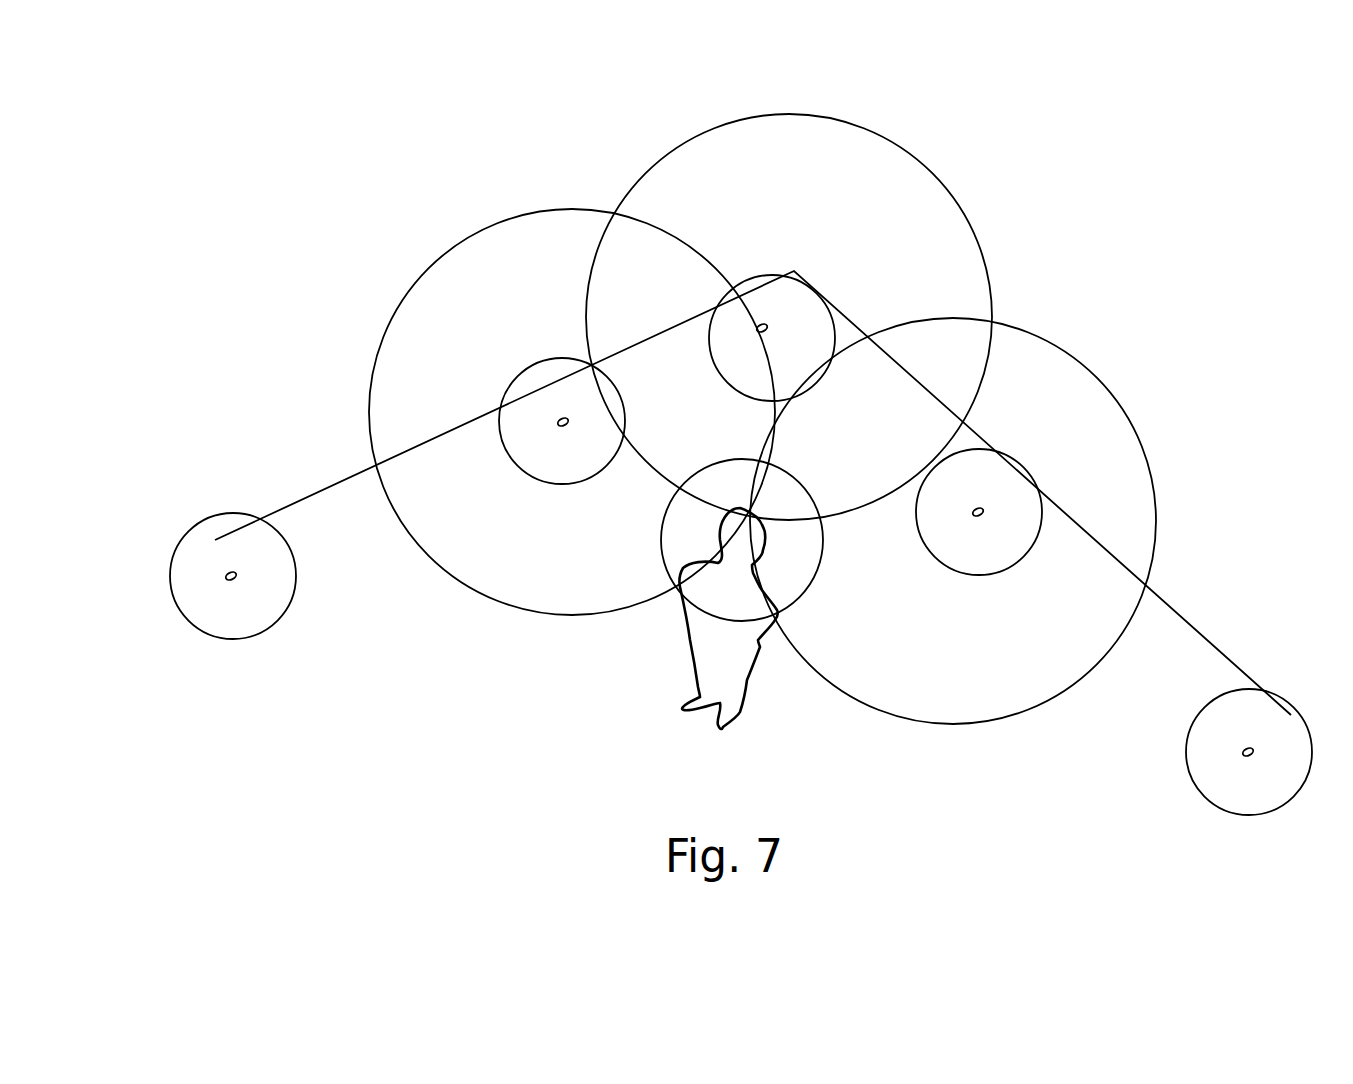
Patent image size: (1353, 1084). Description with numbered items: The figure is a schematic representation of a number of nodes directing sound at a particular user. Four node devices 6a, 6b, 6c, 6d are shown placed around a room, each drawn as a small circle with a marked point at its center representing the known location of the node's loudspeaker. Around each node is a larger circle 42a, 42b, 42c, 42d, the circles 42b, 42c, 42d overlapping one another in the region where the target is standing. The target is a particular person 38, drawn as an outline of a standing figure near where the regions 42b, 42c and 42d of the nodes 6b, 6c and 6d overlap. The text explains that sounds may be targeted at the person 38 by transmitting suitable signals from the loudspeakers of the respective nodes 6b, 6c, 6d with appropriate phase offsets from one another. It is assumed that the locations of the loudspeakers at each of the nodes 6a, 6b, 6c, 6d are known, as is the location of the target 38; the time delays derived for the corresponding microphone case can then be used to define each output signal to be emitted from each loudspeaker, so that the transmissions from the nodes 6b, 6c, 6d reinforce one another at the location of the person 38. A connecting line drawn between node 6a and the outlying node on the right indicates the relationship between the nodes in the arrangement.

The transmitted signal range 42a is at (198, 630).
The transmitted signal range 42b is at (512, 607).
The transmitted signal range 42c is at (928, 170).
The transmitted signal range 42d is at (1099, 379).
The node 6a is at (235, 570).
The node 6b is at (558, 417).
The node 6c is at (760, 325).
The node 6d is at (983, 507).
The person 38 is at (703, 668).